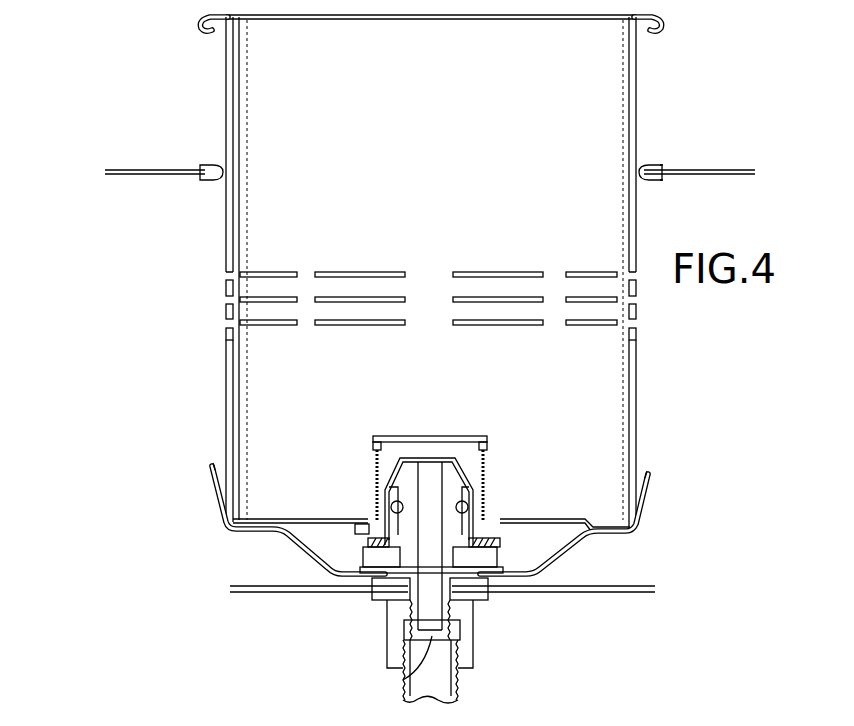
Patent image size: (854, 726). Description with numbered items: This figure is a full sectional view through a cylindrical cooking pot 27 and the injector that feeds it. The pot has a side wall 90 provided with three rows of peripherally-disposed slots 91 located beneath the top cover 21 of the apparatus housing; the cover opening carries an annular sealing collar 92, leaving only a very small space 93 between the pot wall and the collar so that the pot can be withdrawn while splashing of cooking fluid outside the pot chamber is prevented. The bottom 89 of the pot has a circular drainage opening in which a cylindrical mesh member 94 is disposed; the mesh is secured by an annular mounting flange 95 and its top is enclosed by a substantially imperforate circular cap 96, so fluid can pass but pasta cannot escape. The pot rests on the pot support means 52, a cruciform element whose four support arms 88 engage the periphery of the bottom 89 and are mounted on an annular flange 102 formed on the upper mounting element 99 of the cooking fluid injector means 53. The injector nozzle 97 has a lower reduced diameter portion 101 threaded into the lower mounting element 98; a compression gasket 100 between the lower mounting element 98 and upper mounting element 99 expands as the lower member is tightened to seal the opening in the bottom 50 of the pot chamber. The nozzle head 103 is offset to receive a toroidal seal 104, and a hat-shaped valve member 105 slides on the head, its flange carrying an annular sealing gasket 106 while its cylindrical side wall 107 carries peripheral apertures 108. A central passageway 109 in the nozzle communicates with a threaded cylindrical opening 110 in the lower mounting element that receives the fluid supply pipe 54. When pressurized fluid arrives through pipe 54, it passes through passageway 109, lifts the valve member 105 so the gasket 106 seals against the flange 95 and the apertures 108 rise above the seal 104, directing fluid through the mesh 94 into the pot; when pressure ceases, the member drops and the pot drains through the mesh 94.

The top cover 21 is at (702, 170).
The cooking pot 27 is at (640, 65).
The bottom of the pot chamber 50 is at (626, 590).
The pot support means 52 is at (566, 556).
The cooking fluid injector means 53 is at (464, 453).
The fluid supply pipe 54 is at (460, 690).
The support arms 88 is at (648, 485).
The bottom of the cooking pot 89 is at (276, 517).
The side wall 90 is at (638, 382).
The slots 91 is at (500, 272).
The sealing collar 92 is at (661, 167).
The space 93 is at (644, 165).
The cylindrical mesh member 94 is at (471, 468).
The annular mounting flange 95 is at (367, 529).
The circular cap 96 is at (445, 436).
The nozzle 97 is at (414, 484).
The lower mounting element 98 is at (474, 643).
The upper mounting element 99 is at (386, 575).
The compression gasket 100 is at (472, 591).
The lower reduced diameter portion 101 is at (410, 605).
The annular flange 102 is at (497, 556).
The head 103 is at (488, 488).
The toroidal seal 104 is at (468, 507).
The hat-shaped valve member 105 is at (388, 448).
The annular sealing gasket 106 is at (500, 549).
The cylindrical side wall 107 is at (384, 522).
The apertures 108 is at (486, 530).
The passageway 109 is at (412, 619).
The cylindrical opening 110 is at (404, 681).